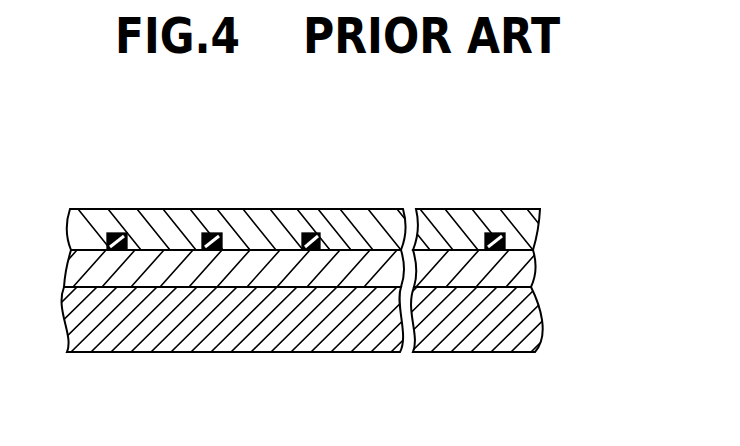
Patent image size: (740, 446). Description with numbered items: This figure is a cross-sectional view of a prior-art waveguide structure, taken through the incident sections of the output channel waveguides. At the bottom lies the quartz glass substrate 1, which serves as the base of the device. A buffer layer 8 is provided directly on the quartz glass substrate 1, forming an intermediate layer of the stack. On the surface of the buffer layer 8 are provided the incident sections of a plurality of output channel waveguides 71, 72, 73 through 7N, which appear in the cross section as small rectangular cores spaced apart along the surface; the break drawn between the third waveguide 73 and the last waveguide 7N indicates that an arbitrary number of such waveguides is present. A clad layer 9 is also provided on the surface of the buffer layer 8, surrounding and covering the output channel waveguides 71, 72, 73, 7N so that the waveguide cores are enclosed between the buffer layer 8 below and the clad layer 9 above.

The quartz glass substrate 1 is at (537, 315).
The buffer layer 8 is at (528, 272).
The clad layer 9 is at (533, 233).
The output channel waveguide 71 is at (122, 233).
The output channel waveguide 72 is at (217, 233).
The output channel waveguide 73 is at (317, 233).
The output channel waveguide 7N is at (503, 233).